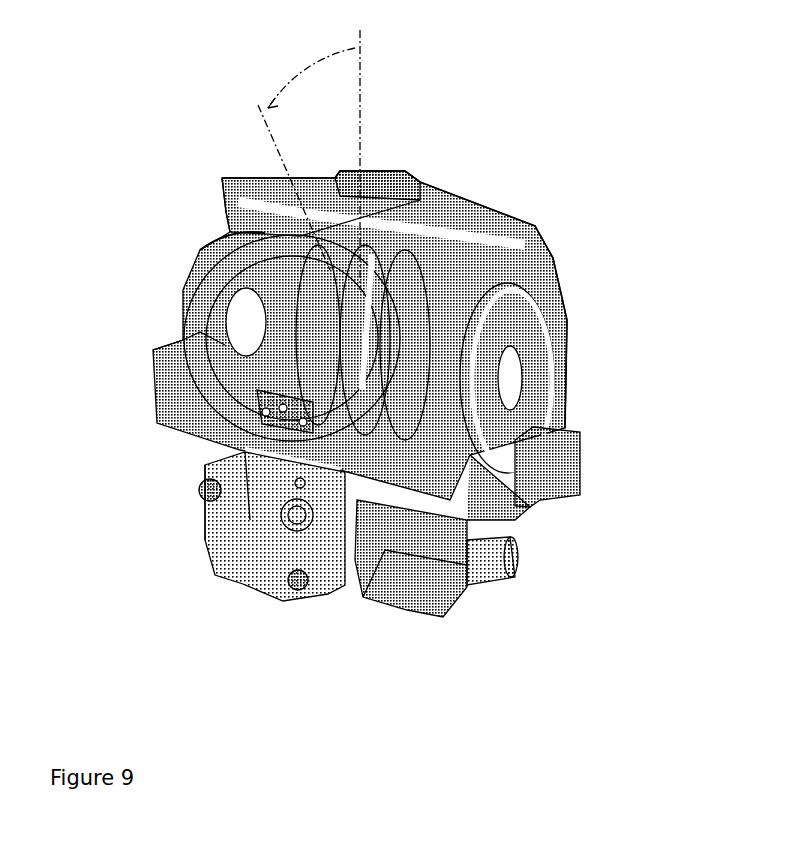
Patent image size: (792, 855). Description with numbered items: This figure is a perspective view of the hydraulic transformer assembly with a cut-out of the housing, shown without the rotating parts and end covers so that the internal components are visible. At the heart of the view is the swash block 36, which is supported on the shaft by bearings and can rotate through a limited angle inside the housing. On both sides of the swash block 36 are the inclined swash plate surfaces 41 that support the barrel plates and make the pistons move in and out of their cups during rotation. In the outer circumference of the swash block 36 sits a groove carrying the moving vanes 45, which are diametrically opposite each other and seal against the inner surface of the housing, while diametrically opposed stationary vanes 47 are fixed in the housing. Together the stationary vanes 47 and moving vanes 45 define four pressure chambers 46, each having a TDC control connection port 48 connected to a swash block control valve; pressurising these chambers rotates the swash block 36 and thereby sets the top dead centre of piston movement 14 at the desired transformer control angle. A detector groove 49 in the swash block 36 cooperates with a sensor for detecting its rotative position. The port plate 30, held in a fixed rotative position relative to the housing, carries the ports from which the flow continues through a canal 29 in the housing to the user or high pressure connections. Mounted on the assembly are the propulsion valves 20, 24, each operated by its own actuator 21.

The top dead centre of piston movement 14 is at (340, 73).
The port plate 30 is at (225, 228).
The canal 29 is at (412, 236).
The swash block 36 is at (180, 341).
The detector groove 49 is at (190, 268).
The inclined swash plate surfaces 41 is at (345, 318).
The moving vanes 45 is at (355, 330).
The pressure chambers 46 is at (365, 353).
The stationary vanes 47 is at (470, 400).
The TDC control connection ports 48 is at (560, 486).
The actuator 21 is at (540, 505).
The propulsion valve 20 is at (186, 526).
The propulsion valve 24 is at (232, 540).